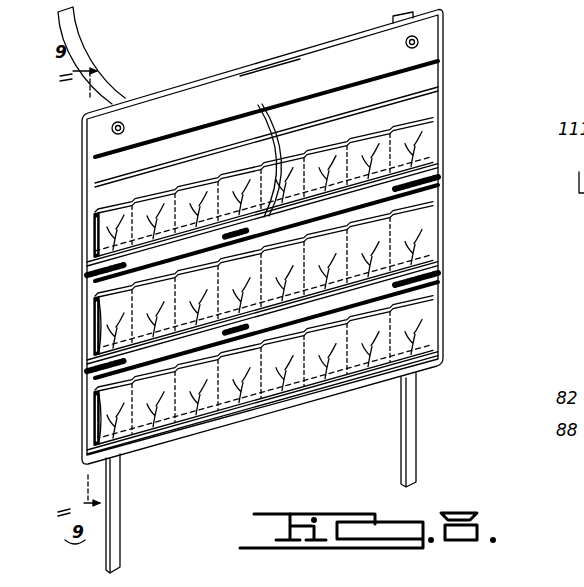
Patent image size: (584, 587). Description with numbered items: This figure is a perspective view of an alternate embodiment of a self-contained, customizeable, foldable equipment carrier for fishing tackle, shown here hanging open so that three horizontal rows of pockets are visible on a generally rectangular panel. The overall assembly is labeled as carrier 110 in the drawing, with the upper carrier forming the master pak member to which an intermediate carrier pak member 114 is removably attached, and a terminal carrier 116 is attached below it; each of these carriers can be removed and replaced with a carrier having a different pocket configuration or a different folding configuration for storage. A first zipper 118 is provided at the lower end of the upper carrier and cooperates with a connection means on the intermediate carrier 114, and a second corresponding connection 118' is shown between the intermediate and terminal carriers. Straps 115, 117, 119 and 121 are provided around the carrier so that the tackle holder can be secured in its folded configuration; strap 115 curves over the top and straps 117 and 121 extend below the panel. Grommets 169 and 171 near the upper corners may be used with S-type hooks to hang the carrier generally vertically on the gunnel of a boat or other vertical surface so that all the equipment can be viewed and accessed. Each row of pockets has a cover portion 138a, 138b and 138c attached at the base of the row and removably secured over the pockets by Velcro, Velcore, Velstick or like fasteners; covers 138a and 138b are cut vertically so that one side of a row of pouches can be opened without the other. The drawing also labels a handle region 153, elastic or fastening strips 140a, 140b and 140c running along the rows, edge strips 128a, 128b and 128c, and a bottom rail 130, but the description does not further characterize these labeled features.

The hanging organizer 110 is at (213, 50).
The strap 115 is at (93, 37).
The strap 119 is at (432, 11).
The top edge of frame 153 is at (259, 72).
The grommet 171 is at (420, 42).
The grommet 169 is at (120, 122).
The elastic strap 140a is at (96, 156).
The pocket row header strip 128a is at (117, 174).
The cover portion 138a is at (103, 213).
The pocket row and rails 130 is at (278, 400).
The first zipper 118 is at (298, 204).
The elastic strap 140b is at (438, 189).
The intermediate carrier pak member 114 is at (80, 353).
The pocket side strip 128b is at (112, 300).
The cover portion 138b is at (100, 300).
The fastener strip 118' is at (300, 306).
The elastic strap 140c is at (438, 289).
The terminal carrier 116 is at (80, 447).
The pocket side strip 128c is at (105, 398).
The cover portion 138c is at (95, 381).
The strap 117 is at (118, 535).
The strap 121 is at (413, 418).